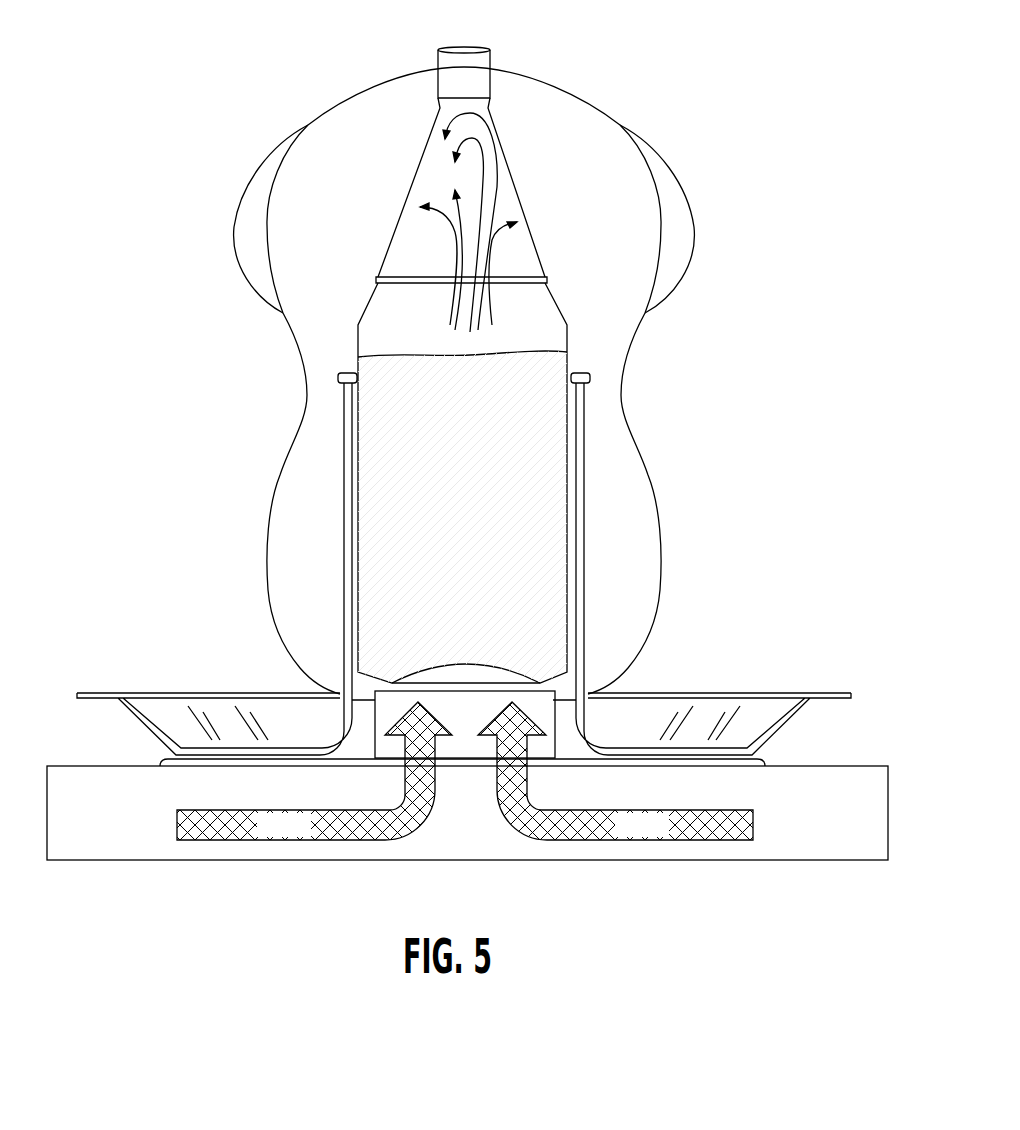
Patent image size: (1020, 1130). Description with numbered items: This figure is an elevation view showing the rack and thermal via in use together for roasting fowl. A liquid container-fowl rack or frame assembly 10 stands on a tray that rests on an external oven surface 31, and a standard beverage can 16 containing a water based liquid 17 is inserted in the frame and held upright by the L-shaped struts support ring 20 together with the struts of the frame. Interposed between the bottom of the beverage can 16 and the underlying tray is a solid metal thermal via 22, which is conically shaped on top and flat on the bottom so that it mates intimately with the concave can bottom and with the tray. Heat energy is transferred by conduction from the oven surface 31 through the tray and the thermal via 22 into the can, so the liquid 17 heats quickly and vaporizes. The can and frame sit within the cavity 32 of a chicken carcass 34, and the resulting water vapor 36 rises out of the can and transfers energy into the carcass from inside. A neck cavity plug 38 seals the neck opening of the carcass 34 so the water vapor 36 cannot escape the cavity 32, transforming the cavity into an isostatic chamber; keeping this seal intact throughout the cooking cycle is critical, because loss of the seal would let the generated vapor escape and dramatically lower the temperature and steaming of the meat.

The liquid container-fowl rack or frame assembly 10 is at (600, 520).
The beverage can 16 is at (557, 310).
The liquid 17 is at (518, 480).
The L-shaped struts support ring 20 is at (340, 697).
The thermal via 22 is at (462, 706).
The oven surface 31 is at (125, 842).
The cavity 32 is at (523, 268).
The chicken carcass 34 is at (555, 128).
The water vapor 36 is at (505, 171).
The neck cavity plug 38 is at (438, 68).